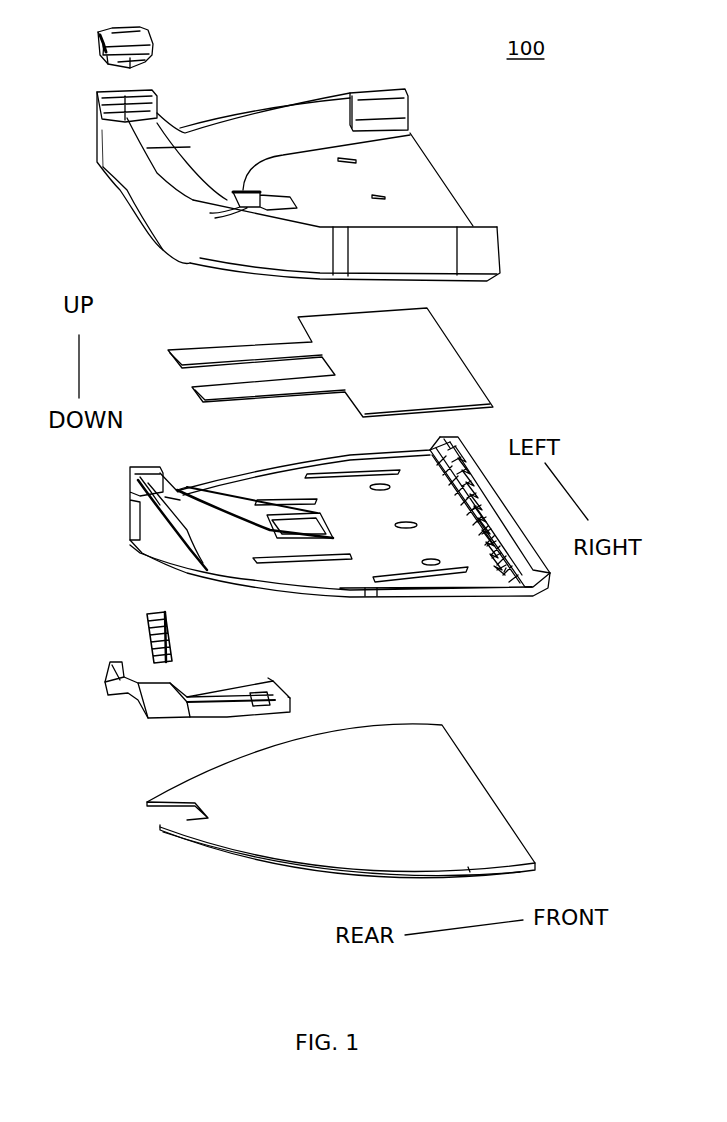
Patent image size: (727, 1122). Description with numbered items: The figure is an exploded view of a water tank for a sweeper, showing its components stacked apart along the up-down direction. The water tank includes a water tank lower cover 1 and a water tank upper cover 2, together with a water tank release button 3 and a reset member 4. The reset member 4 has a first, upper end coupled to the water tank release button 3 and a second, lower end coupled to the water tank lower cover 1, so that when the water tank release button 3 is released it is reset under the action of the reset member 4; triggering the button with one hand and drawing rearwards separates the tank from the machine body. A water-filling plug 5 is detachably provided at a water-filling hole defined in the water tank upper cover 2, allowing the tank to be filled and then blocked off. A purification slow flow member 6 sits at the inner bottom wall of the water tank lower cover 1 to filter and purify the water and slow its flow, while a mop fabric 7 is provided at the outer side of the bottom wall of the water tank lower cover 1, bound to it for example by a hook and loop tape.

The water tank lower cover 1 is at (487, 575).
The water tank upper cover 2 is at (410, 186).
The water tank release button 3 is at (227, 703).
The reset member 4 is at (142, 625).
The water-filling plug 5 is at (120, 33).
The purification slow flow member 6 is at (443, 362).
The mop fabric 7 is at (480, 825).